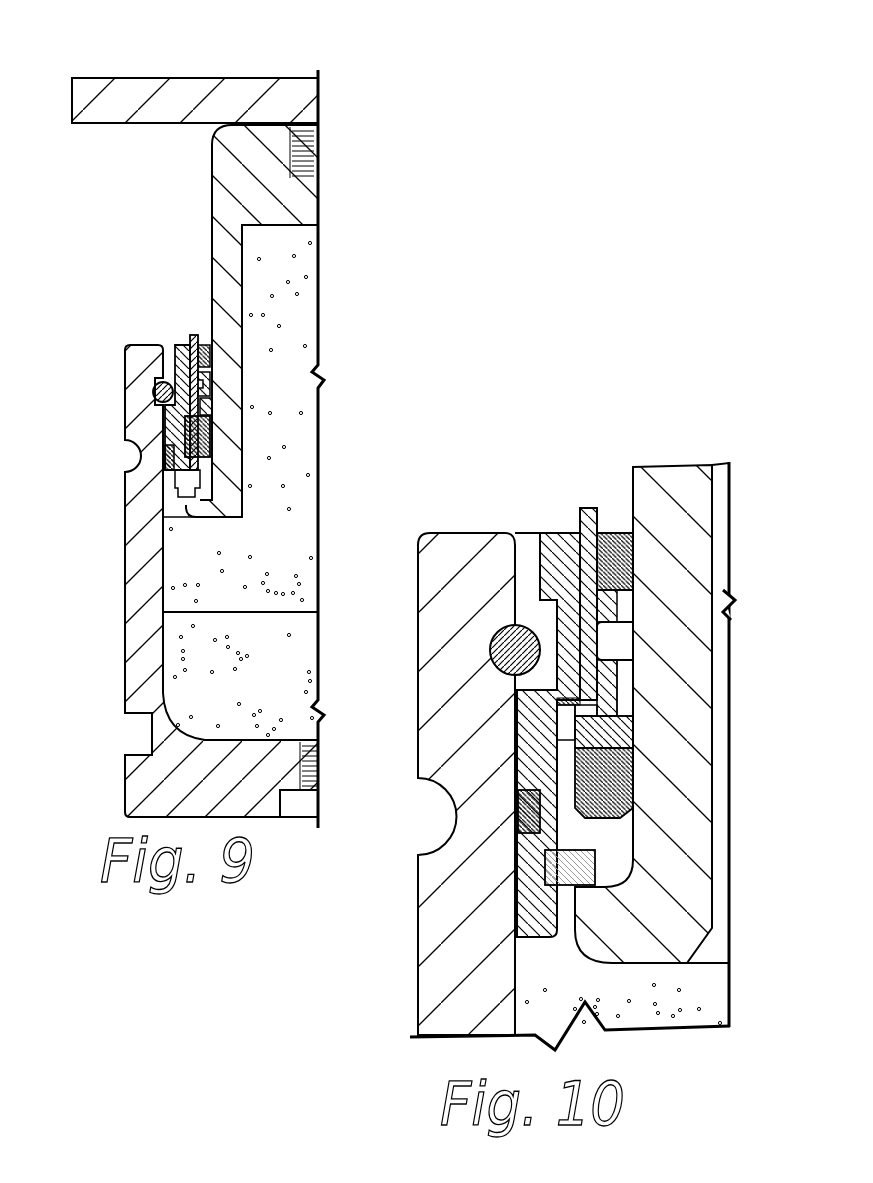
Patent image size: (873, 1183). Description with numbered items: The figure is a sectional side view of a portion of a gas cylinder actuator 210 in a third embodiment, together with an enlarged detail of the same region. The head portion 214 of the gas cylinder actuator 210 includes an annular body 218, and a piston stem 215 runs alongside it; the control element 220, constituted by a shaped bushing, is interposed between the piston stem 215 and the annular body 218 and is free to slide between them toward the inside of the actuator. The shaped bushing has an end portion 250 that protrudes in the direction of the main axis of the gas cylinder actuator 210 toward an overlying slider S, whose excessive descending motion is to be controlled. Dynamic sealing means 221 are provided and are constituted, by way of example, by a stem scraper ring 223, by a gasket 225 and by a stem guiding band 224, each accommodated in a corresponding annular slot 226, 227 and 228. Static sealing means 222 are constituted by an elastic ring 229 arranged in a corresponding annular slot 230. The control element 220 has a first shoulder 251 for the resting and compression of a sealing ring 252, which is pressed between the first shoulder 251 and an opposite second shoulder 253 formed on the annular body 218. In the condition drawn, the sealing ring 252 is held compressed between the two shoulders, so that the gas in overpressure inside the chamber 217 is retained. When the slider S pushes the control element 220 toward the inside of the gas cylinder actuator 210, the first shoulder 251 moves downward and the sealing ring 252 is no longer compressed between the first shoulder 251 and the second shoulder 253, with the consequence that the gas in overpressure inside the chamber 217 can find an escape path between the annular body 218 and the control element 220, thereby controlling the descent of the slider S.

In FIG. 9, the slider S is at (128, 84).
In FIG. 9, the gas cylinder actuator 210 is at (154, 262).
In FIG. 9, the head portion 214 is at (112, 345).
In FIG. 9, the piston stem 215 is at (242, 150).
In FIG. 10, the piston stem 215 is at (662, 935).
In FIG. 9, the chamber 217 is at (215, 545).
In FIG. 9, the annular body 218 is at (172, 340).
In FIG. 10, the annular body 218 is at (540, 528).
In FIG. 9, the control element 220 is at (186, 325).
In FIG. 10, the control element 220 is at (591, 500).
In FIG. 9, the dynamic sealing means 221 is at (222, 413).
In FIG. 9, the static sealing means 222 is at (154, 467).
In FIG. 9, the stem scraper ring 223 is at (210, 355).
In FIG. 10, the stem scraper ring 223 is at (612, 560).
In FIG. 9, the stem guiding band 224 is at (210, 377).
In FIG. 10, the stem guiding band 224 is at (620, 647).
In FIG. 9, the gasket 225 is at (213, 429).
In FIG. 10, the gasket 225 is at (634, 788).
In FIG. 10, the annular slot 226 is at (626, 590).
In FIG. 10, the annular slot 227 is at (618, 657).
In FIG. 10, the annular slot 228 is at (625, 752).
In FIG. 10, the elastic ring 229 is at (516, 810).
In FIG. 10, the annular slot 230 is at (546, 868).
In FIG. 10, the end portion 250 is at (577, 533).
In FIG. 10, the first shoulder 251 is at (566, 695).
In FIG. 10, the sealing ring 252 is at (565, 735).
In FIG. 10, the second shoulder 253 is at (500, 640).